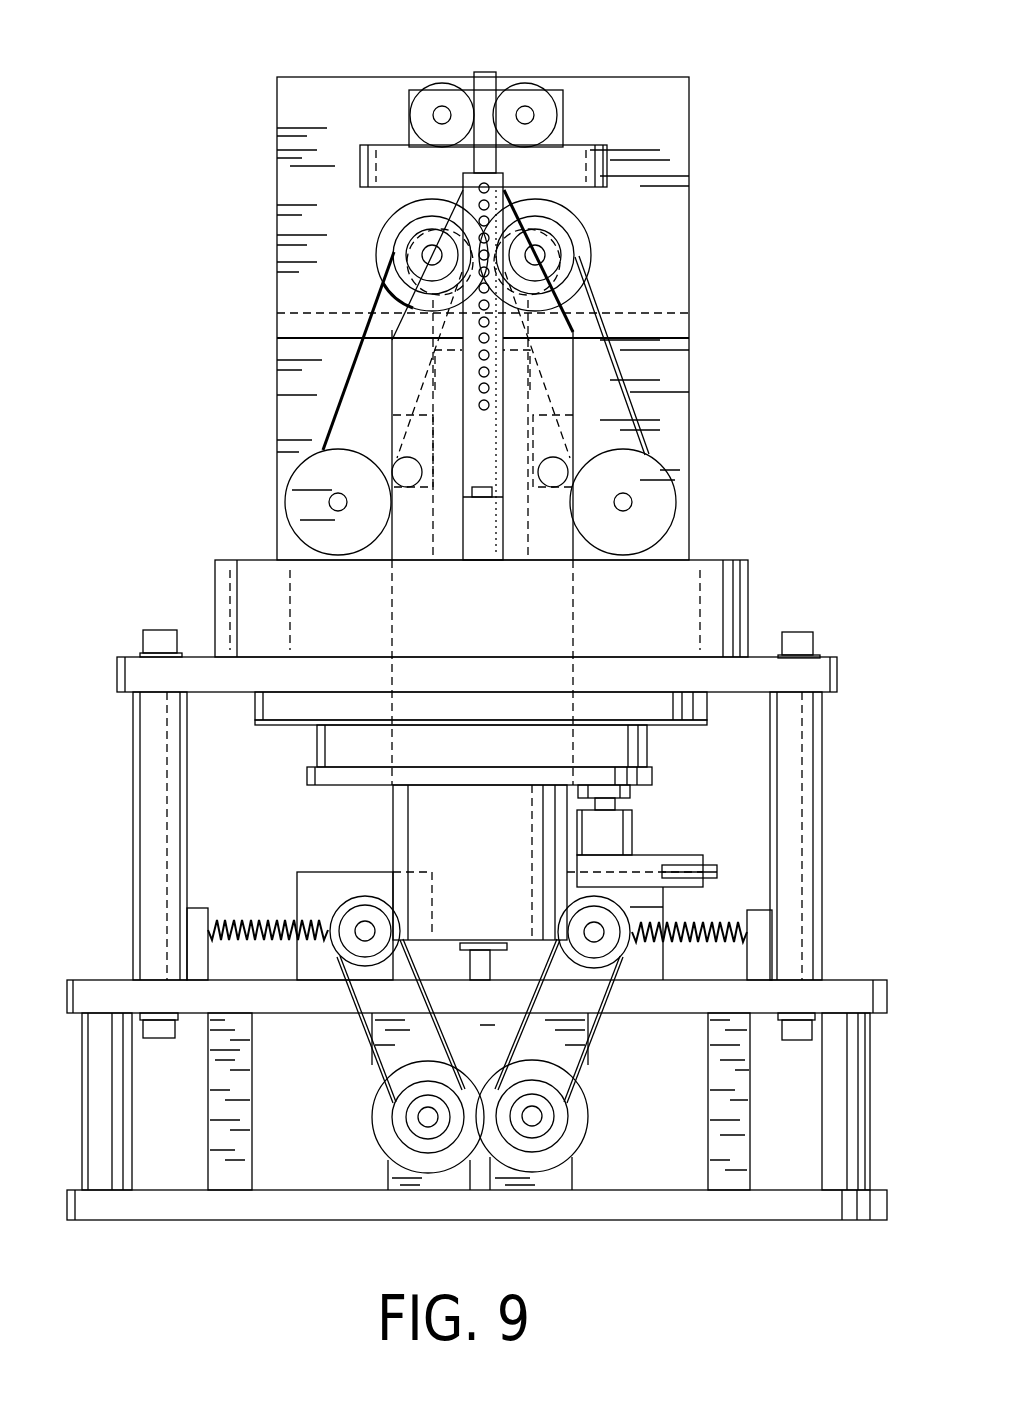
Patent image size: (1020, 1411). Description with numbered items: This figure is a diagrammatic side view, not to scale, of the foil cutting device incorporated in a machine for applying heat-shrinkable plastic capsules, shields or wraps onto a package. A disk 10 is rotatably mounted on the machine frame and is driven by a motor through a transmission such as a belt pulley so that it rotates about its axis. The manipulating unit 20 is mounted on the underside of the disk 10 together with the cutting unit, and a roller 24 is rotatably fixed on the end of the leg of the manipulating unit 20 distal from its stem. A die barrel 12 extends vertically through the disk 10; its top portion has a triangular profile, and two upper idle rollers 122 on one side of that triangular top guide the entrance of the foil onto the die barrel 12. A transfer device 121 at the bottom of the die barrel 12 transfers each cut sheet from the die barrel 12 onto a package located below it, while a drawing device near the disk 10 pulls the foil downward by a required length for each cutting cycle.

The disk 10 is at (650, 773).
The die barrel 12 is at (562, 360).
The manipulating unit 20 is at (623, 833).
The roller 24 is at (722, 868).
The transfer device 121 is at (352, 958).
The upper idle rollers 122 is at (531, 80).